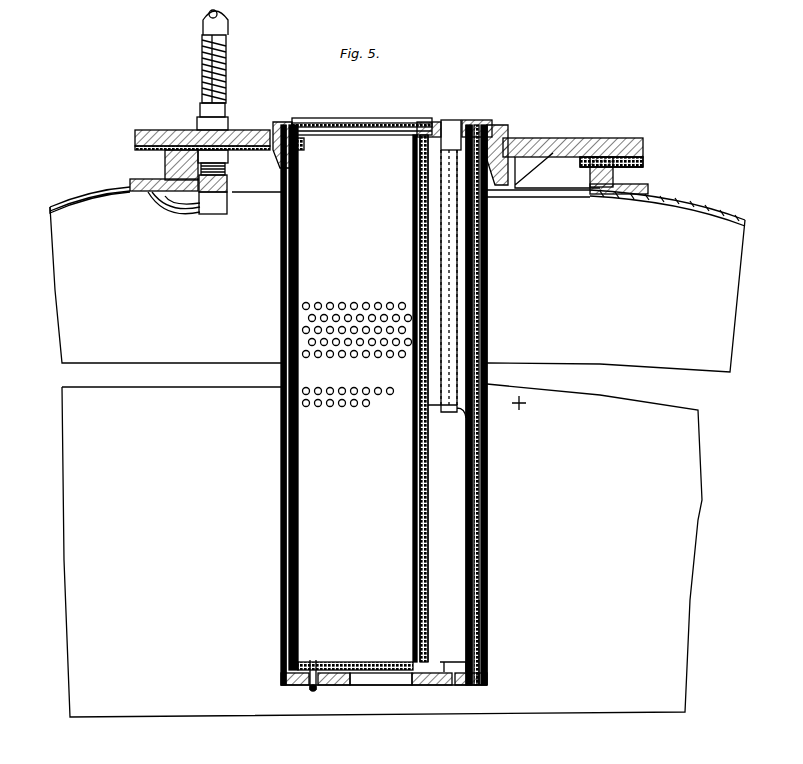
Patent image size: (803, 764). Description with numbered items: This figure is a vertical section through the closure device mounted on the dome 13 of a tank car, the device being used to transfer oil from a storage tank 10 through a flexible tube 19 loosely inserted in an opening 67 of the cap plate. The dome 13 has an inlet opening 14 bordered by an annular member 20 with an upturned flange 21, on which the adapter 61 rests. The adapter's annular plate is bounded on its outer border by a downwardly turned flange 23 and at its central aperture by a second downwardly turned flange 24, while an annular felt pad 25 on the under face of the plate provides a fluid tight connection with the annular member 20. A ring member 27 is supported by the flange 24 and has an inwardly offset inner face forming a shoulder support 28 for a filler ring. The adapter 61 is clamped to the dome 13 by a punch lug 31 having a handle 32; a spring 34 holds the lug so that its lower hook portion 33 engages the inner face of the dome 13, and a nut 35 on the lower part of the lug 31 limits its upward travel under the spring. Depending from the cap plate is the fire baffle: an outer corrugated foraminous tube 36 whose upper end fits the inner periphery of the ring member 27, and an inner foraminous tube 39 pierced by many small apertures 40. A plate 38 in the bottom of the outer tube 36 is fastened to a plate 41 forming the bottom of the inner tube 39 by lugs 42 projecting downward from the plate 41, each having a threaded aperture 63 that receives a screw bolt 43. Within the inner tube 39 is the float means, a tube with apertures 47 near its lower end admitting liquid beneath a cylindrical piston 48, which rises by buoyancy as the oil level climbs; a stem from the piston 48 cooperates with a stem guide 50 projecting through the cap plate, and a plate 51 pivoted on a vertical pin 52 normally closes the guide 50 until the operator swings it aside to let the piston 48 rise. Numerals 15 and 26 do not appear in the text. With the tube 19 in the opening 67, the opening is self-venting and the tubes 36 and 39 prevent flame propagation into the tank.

The storage tank 10 is at (475, 490).
The dome 13 is at (92, 196).
The inlet opening 14 is at (560, 158).
The perforations 15 is at (345, 303).
The flexible tube 19 is at (472, 345).
The annular member 20 is at (132, 184).
The upturned flange 21 is at (165, 160).
The downwardly turned flange 23 is at (645, 160).
The downwardly turned flange 24 is at (262, 177).
The annular pad 25 is at (635, 150).
The flange plate 26 is at (515, 142).
The ring member 27 is at (279, 122).
The shoulder support 28 is at (303, 166).
The punch lug 31 is at (222, 80).
The handle 32 is at (205, 24).
The lower hook portion 33 is at (163, 210).
The spring 34 is at (203, 46).
The nut 35 is at (240, 140).
The outer foraminous tube 36 is at (304, 146).
The plate 38 is at (401, 690).
The inner foraminous tube 39 is at (478, 120).
The apertures 40 is at (521, 404).
The plate 41 is at (483, 685).
The lugs 42 is at (462, 685).
The screw bolt 43 is at (328, 685).
The apertures 47 is at (480, 645).
The cylindrical piston 48 is at (470, 420).
The stem guide 50 is at (440, 152).
The plate 51 is at (434, 122).
The vertical pin 52 is at (455, 120).
The adapter 61 is at (281, 400).
The aperture 63 is at (300, 680).
The opening 67 is at (345, 118).